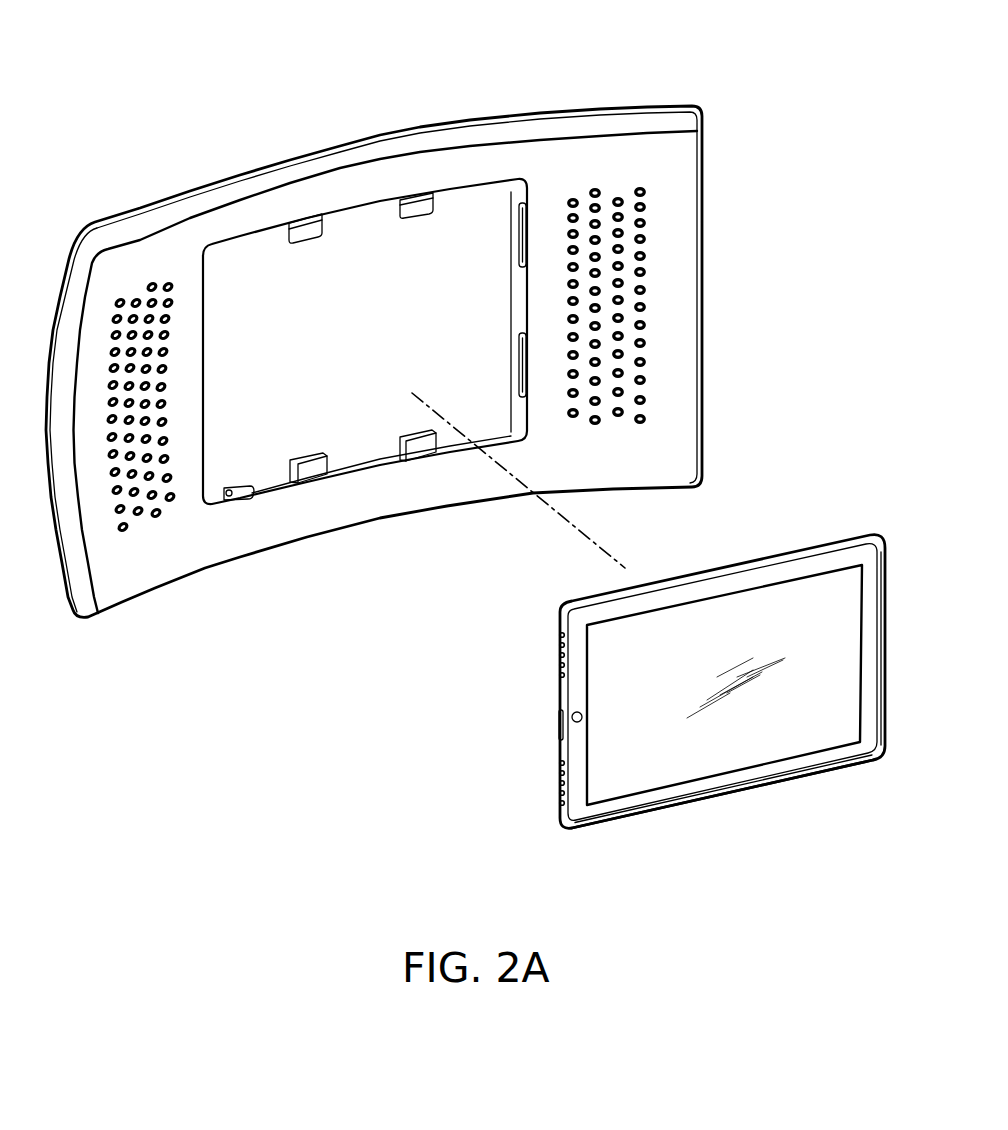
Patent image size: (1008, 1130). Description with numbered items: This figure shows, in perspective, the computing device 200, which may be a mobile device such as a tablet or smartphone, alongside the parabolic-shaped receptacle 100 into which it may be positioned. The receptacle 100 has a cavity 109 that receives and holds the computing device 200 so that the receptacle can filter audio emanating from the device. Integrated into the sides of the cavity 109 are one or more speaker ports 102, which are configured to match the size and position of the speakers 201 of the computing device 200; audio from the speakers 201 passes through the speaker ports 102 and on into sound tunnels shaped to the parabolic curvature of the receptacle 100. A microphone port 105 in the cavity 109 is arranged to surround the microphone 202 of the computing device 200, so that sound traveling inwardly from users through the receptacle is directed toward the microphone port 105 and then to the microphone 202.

The parabolic-shaped receptacle 100 is at (320, 118).
The speaker ports 102 is at (520, 363).
The microphone port 105 is at (253, 494).
The cavity 109 is at (389, 352).
The computing device 200 is at (810, 518).
The speakers 201 is at (555, 663).
The microphone 202 is at (613, 823).